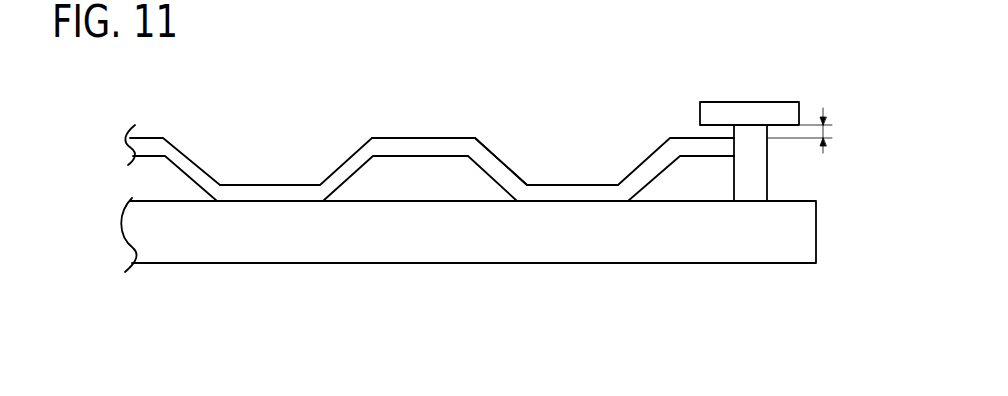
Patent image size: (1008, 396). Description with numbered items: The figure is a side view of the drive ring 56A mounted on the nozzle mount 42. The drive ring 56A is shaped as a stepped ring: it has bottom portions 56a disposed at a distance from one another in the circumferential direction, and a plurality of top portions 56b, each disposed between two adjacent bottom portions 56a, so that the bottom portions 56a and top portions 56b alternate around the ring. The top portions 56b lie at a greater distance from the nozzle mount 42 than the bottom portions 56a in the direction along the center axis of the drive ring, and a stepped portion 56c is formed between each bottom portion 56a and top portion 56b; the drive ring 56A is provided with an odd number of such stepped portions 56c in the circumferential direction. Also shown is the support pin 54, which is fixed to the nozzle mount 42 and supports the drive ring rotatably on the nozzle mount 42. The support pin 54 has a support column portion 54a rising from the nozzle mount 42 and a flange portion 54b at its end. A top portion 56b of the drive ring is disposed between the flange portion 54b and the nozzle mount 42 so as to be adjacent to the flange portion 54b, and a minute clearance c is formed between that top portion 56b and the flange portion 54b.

The nozzle mount 42 is at (633, 235).
The support pin 54 is at (786, 100).
The support column portion 54a is at (770, 172).
The flange portion 54b is at (758, 100).
The drive ring 56A is at (423, 133).
The bottom portion 56a is at (565, 190).
The top portion 56b is at (393, 137).
The stepped portion 56c is at (497, 155).
The clearance c is at (811, 130).